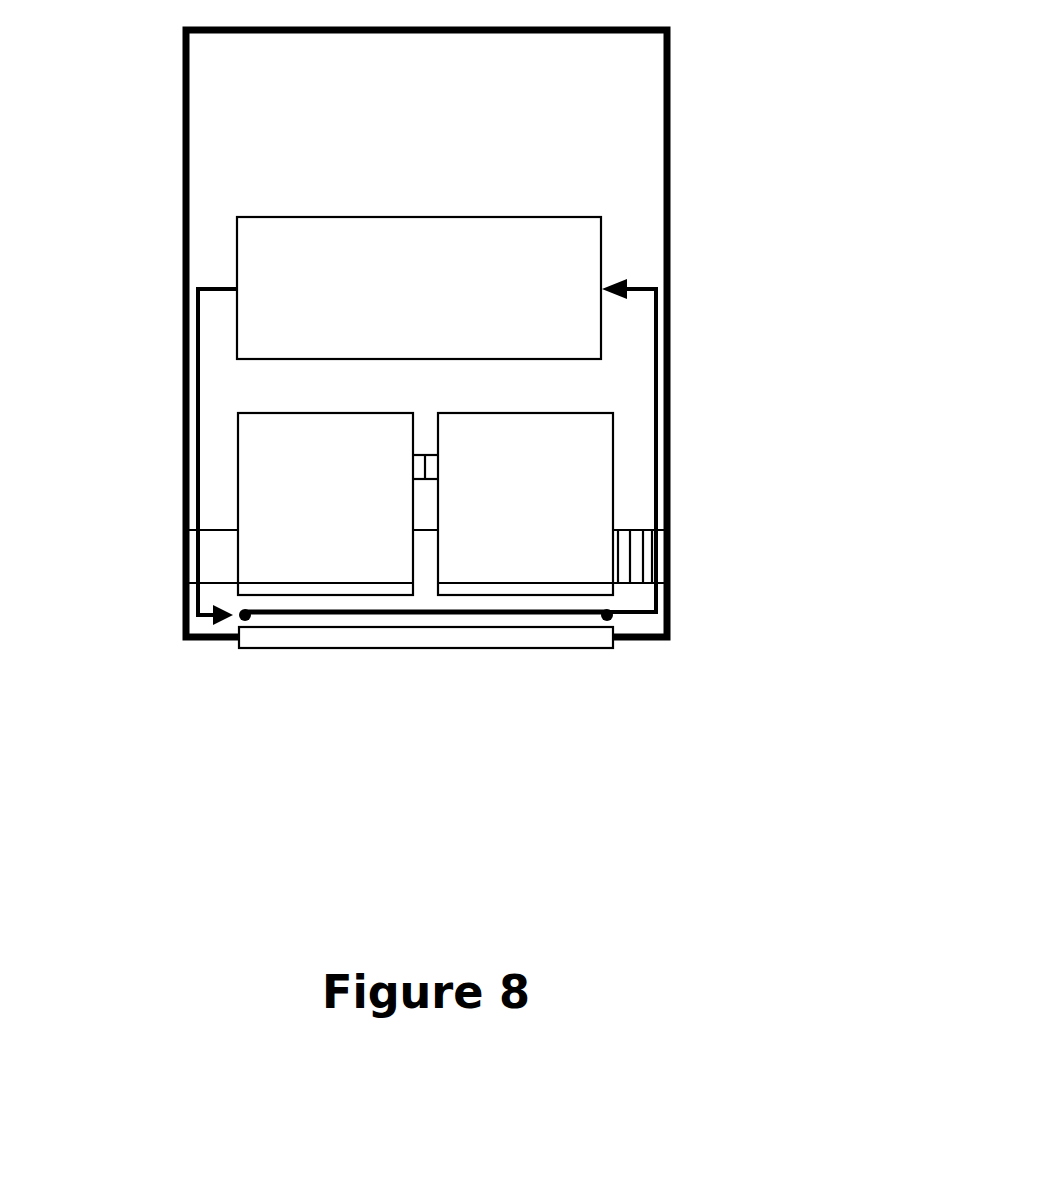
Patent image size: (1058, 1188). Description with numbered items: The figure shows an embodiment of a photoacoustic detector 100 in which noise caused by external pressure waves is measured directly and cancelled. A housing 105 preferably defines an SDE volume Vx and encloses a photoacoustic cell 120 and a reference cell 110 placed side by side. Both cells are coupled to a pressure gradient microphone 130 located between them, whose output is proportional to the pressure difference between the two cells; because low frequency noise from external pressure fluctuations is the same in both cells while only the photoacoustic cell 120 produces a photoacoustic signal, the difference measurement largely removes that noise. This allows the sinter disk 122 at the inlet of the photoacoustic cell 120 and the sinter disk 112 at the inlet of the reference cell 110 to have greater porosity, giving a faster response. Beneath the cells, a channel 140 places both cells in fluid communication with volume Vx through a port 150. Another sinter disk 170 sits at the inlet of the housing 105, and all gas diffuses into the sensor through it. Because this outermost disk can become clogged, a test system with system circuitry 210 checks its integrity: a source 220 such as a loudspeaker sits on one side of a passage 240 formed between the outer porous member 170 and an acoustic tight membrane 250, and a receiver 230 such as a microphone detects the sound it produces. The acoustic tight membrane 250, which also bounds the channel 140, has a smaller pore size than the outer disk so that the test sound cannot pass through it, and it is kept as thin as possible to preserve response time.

The photoacoustic detector 100 is at (772, 153).
The housing 105 is at (671, 230).
The reference cell 110 is at (614, 483).
The sinter disk 112 is at (575, 597).
The photoacoustic cell 120 is at (238, 442).
The sinter disk 122 is at (313, 597).
The pressure gradient microphone 130 is at (424, 455).
The channel 140 is at (407, 602).
The port 150 is at (640, 595).
The sinter disk 170 is at (505, 648).
The system circuitry 210 is at (453, 346).
The source of sound/pressure waves 220 is at (240, 620).
The sensor/receiver 230 is at (610, 618).
The passage 240 is at (332, 617).
The acoustic tight membrane 250 is at (428, 610).